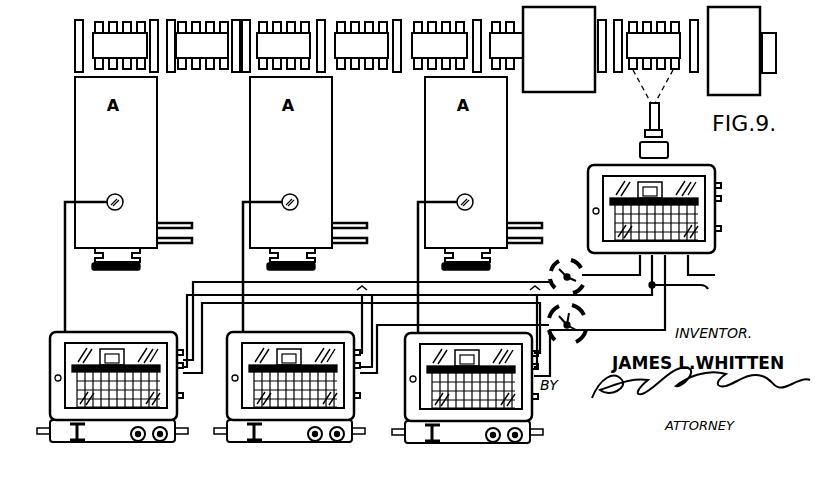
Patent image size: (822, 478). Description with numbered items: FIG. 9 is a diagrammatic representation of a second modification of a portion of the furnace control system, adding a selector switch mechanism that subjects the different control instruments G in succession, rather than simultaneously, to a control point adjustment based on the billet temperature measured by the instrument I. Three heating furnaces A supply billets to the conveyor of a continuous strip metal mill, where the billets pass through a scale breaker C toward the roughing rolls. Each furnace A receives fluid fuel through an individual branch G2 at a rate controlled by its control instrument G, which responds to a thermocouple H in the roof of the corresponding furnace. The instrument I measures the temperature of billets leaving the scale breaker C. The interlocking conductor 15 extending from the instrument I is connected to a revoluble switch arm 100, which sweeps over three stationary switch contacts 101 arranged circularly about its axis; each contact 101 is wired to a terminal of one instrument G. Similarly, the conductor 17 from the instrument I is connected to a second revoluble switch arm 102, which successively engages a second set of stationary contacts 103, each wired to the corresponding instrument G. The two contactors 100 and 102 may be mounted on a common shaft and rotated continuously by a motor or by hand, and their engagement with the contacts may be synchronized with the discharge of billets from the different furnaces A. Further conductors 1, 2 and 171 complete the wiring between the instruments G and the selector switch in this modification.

The conductor line 1 is at (708, 289).
The conductor line 2 is at (715, 275).
The interlocking conductor 15 is at (562, 388).
The conductor 17 is at (618, 275).
The revoluble switch arm 100 is at (586, 318).
The stationary switch contacts 101 is at (547, 318).
The revoluble switch arm 102 is at (583, 289).
The stationary contacts 103 is at (567, 262).
The conductor 171 is at (215, 281).
The heating furnace A is at (308, 173).
The scale breaker C is at (559, 49).
The control instrument G is at (50, 361).
The individual branch G2 is at (540, 238).
The thermocouple H is at (462, 224).
The instrument I is at (721, 200).
The weight W is at (655, 150).